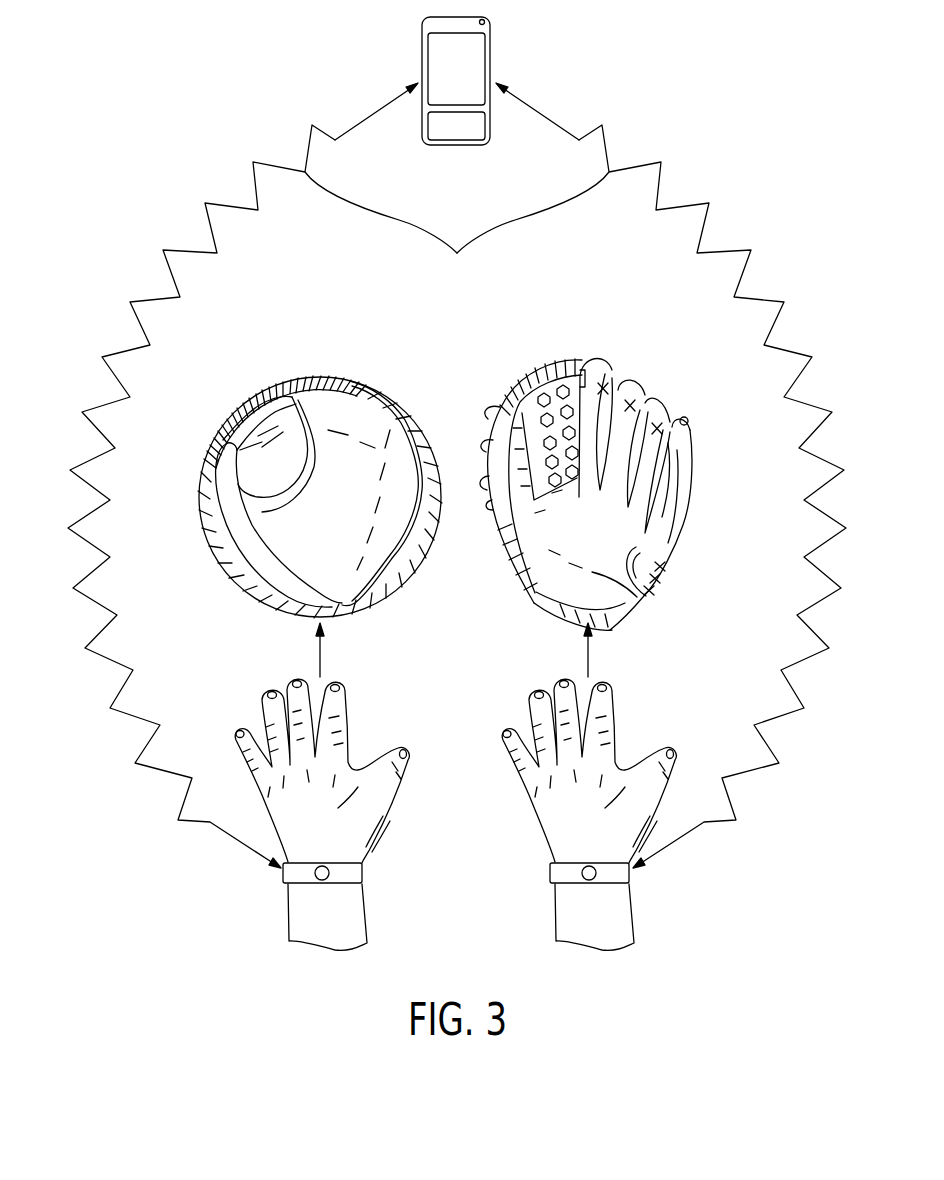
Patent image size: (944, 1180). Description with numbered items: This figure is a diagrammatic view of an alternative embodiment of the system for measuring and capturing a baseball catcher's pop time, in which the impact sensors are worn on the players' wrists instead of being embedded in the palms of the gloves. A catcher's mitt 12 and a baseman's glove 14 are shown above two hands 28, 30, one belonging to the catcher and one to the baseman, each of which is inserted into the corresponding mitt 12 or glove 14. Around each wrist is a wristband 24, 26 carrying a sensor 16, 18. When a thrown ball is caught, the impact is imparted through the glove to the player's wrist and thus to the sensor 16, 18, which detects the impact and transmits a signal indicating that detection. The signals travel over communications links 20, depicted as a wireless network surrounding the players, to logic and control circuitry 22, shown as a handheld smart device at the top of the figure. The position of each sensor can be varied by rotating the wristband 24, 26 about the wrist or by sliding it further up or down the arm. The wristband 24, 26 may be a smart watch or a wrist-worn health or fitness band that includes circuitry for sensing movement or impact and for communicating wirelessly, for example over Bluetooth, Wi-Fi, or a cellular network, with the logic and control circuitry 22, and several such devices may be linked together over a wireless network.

The catcher's mitt 12 is at (342, 378).
The baseman's glove 14 is at (602, 362).
The sensor 16 is at (318, 877).
The sensor 18 is at (600, 875).
The communications links 20 is at (457, 475).
The logic and control circuitry 22 is at (492, 55).
The wristband 24 is at (357, 872).
The wristband 26 is at (560, 872).
The left hand 28 is at (340, 787).
The right hand 30 is at (607, 787).